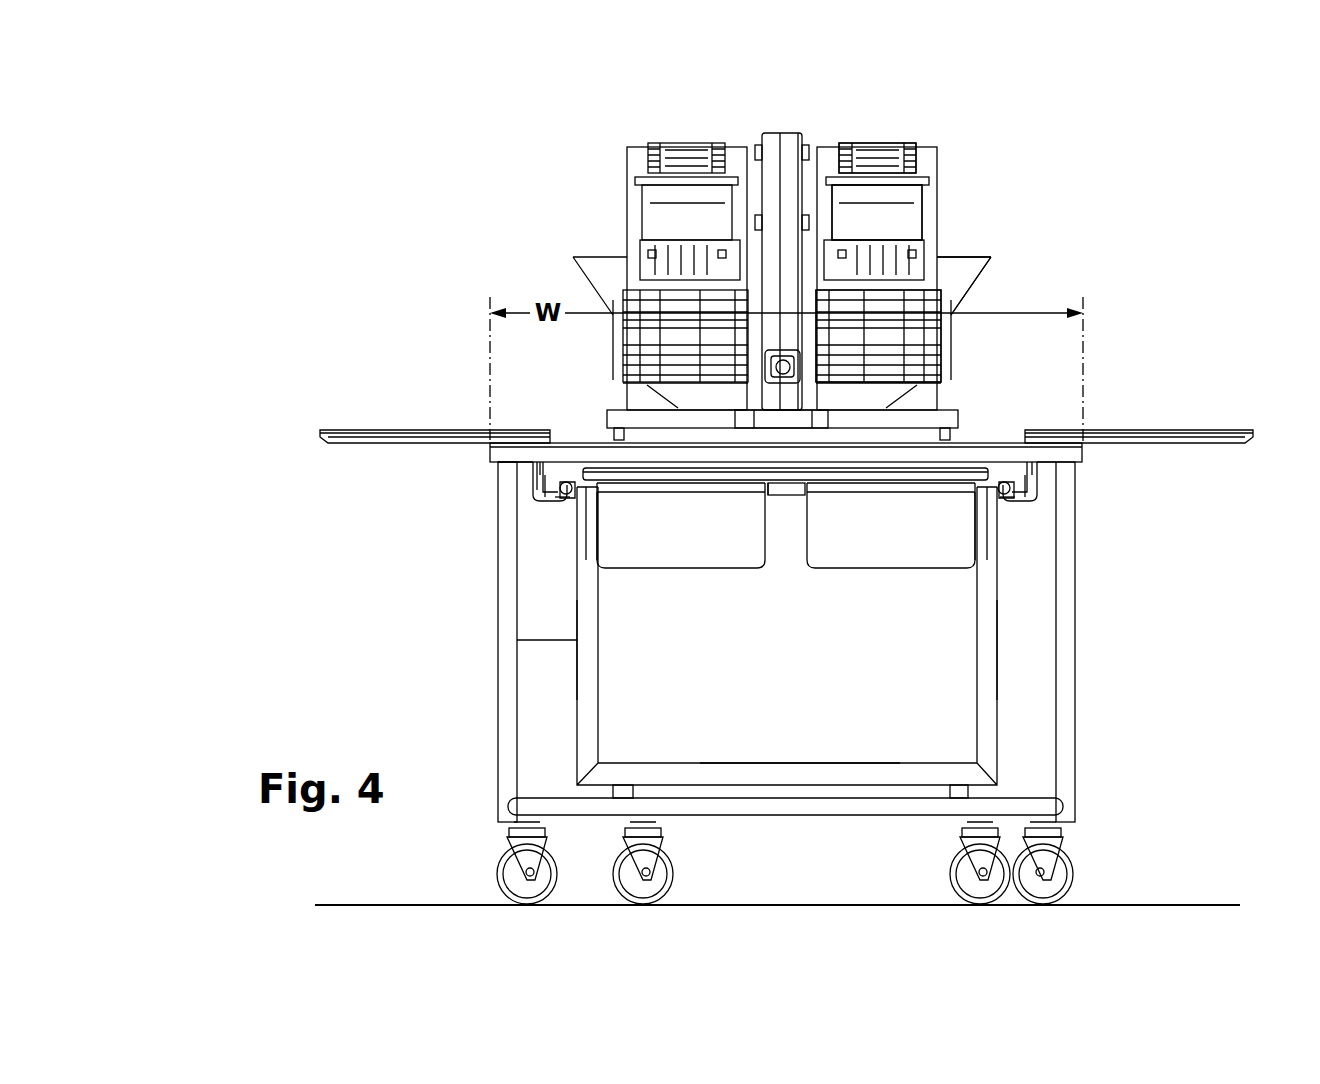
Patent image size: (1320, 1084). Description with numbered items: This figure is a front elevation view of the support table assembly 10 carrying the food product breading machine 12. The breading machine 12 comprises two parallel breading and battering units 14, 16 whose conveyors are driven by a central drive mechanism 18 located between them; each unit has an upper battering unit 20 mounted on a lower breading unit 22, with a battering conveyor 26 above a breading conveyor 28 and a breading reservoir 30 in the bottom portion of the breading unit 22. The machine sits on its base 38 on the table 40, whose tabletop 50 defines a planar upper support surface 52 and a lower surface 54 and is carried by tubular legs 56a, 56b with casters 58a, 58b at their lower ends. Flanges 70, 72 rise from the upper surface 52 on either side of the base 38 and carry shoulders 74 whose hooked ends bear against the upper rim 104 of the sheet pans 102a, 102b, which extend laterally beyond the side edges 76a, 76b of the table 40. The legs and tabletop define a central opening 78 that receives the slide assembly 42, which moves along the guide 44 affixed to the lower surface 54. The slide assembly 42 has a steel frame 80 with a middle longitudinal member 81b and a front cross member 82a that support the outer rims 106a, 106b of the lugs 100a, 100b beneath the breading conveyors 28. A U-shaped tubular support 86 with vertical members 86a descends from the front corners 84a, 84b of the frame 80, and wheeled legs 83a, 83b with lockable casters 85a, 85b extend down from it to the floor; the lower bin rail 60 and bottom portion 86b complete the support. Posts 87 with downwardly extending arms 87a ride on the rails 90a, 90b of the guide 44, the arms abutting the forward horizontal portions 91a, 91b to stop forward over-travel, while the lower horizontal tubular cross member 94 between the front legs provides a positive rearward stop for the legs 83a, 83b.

The support table assembly 10 is at (805, 623).
The food product breading machine 12 is at (845, 273).
The breading and battering unit 14 is at (908, 127).
The breading and battering unit 16 is at (684, 126).
The central drive mechanism 18 is at (800, 130).
The battering unit 20 is at (940, 214).
The breading unit 22 is at (957, 352).
The battering conveyor 26 is at (880, 160).
The breading conveyor 28 is at (945, 300).
The breading reservoir 30 is at (960, 341).
The base 38 is at (948, 412).
The table 40 is at (800, 622).
The slide assembly 42 is at (780, 636).
The guide 44 is at (552, 506).
The tabletop 50 is at (587, 440).
The upper support surface 52 is at (583, 440).
The lower surface 54 is at (540, 470).
The tubular leg 56a is at (1065, 730).
The tubular leg 56b is at (515, 683).
The caster 58a is at (1075, 843).
The caster 58b is at (505, 838).
The support rail 60 is at (900, 472).
The flange 70 is at (1022, 440).
The flange 72 is at (797, 492).
The shoulder 74 is at (553, 432).
The side edge 76a is at (1101, 461).
The side edge 76b is at (482, 455).
The central opening 78 is at (568, 652).
The frame 80 is at (790, 505).
The middle longitudinal member 81b is at (778, 490).
The front cross member 82a is at (670, 492).
The wheeled leg 83a is at (955, 800).
The wheeled leg 83b is at (625, 808).
The front corner 84a is at (985, 492).
The front corner 84b is at (593, 492).
The lockable caster 85a is at (958, 843).
The lockable caster 85b is at (620, 842).
The U-shaped tubular support 86 is at (608, 672).
The vertical member 86a is at (583, 728).
The bin bottom 86b is at (808, 775).
The support 87 is at (570, 470).
The downwardly extending arm 87a is at (547, 496).
The rail 90a is at (1028, 478).
The rail 90b is at (545, 490).
The forward horizontal portion 91a is at (1012, 500).
The forward horizontal portion 91b is at (563, 505).
The lower horizontal tubular cross member 94 is at (778, 802).
The lug 100a is at (891, 550).
The lug 100b is at (681, 552).
The sheet pan 102a is at (1222, 432).
The sheet pan 102b is at (388, 432).
The upper rim 104 is at (348, 432).
The outer rim 106a is at (820, 460).
The outer rim 106b is at (760, 460).